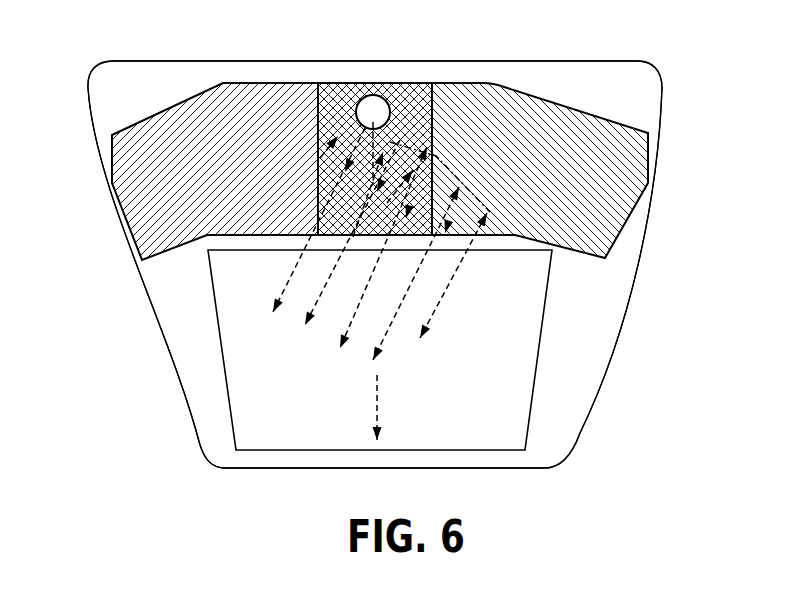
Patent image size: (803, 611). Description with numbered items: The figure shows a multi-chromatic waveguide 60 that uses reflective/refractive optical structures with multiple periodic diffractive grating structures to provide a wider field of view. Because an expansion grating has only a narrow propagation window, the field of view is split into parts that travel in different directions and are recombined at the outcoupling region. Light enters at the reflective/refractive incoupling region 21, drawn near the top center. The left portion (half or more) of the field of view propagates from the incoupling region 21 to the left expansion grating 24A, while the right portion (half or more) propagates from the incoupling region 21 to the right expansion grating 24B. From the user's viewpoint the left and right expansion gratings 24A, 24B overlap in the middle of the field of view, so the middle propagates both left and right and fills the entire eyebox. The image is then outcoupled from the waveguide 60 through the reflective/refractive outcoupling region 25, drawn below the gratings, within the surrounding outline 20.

The housing 20 is at (580, 433).
The reflective/refractive incoupling region 21 is at (386, 94).
The left expansion grating 24A is at (108, 136).
The right expansion grating 24B is at (648, 148).
The reflective/refractive outcoupling region 25 is at (535, 375).
The waveguide 60 is at (648, 62).